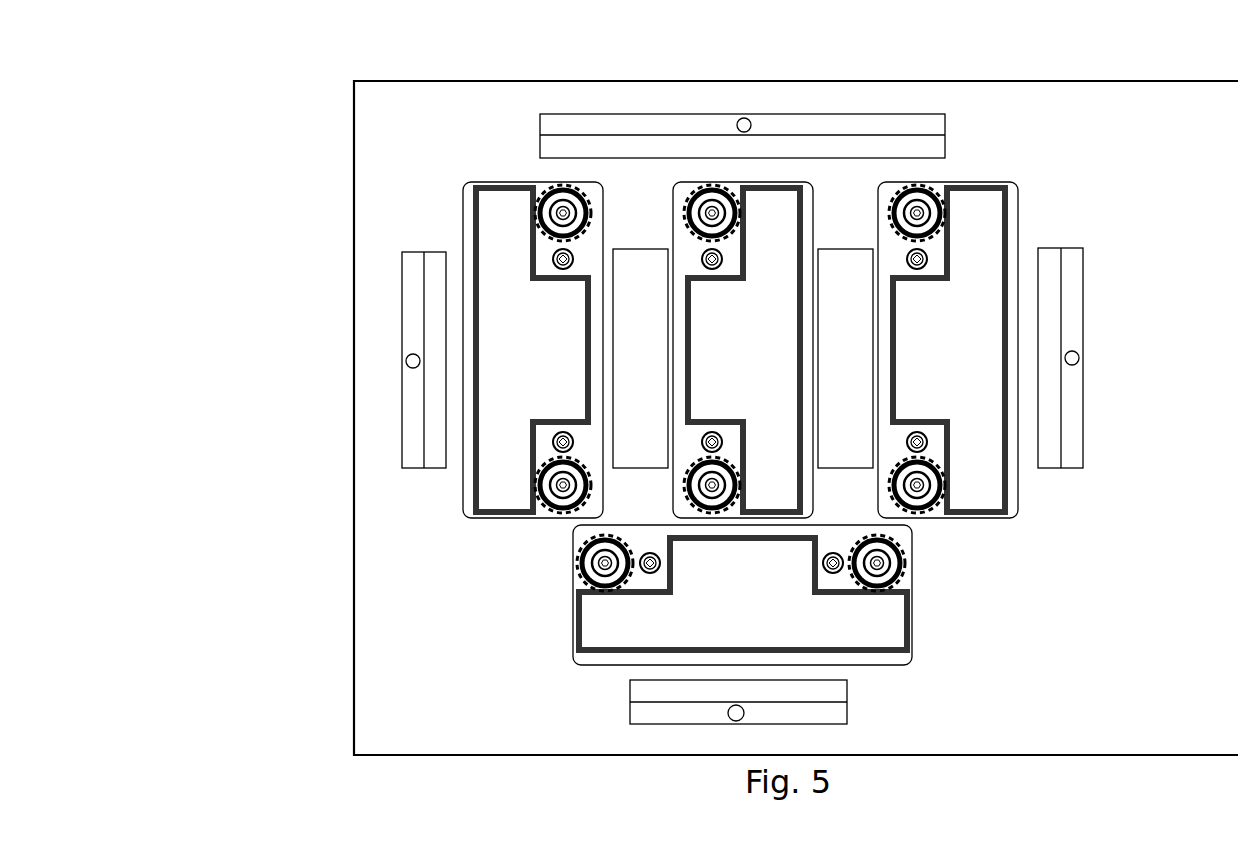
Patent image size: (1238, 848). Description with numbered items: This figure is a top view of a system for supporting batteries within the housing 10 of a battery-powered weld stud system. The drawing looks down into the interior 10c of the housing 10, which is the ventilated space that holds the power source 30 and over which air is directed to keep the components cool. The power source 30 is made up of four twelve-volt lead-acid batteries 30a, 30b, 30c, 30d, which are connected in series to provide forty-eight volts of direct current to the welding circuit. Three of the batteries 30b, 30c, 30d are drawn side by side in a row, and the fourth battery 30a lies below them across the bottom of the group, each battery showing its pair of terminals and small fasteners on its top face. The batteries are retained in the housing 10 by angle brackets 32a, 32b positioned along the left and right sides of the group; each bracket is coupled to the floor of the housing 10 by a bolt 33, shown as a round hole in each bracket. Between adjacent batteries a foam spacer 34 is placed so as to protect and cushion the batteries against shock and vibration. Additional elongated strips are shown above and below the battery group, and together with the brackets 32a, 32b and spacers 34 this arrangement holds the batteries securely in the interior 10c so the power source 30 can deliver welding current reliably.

The housing 10 is at (718, 446).
The interior 10c is at (296, 766).
The power source 30 is at (739, 375).
The battery 30a is at (912, 603).
The battery 30b is at (1018, 494).
The battery 30c is at (813, 205).
The battery 30d is at (463, 210).
The angle bracket 32a is at (402, 316).
The angle bracket 32b is at (1083, 282).
The bolt 33 is at (408, 366).
The foam spacer 34 is at (628, 250).